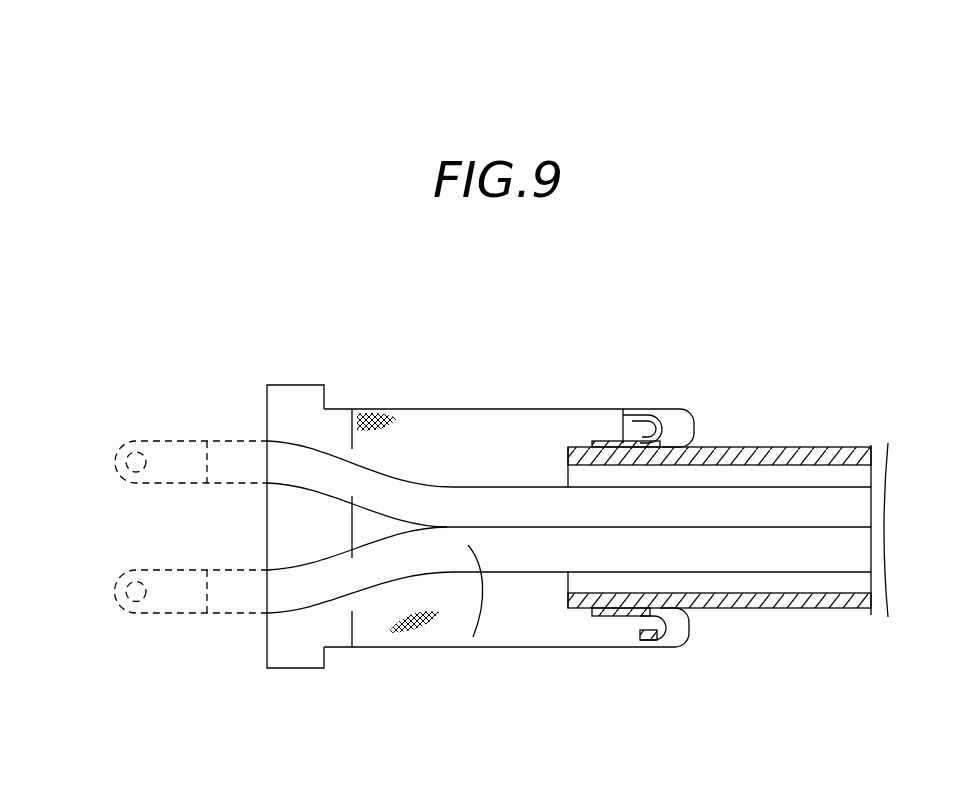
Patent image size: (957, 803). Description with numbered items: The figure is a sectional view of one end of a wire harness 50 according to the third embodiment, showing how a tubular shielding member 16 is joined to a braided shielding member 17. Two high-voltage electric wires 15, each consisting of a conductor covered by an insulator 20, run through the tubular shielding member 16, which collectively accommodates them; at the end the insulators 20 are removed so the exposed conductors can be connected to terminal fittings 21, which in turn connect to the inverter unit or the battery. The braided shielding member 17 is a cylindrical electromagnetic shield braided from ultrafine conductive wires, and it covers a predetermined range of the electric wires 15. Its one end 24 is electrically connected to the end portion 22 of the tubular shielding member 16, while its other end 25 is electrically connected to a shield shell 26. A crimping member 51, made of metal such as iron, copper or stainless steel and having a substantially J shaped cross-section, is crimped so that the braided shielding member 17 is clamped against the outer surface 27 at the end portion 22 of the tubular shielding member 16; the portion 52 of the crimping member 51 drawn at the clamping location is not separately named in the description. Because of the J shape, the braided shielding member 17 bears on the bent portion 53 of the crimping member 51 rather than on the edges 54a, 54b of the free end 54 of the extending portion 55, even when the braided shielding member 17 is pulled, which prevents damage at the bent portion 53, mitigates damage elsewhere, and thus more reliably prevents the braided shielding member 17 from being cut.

The high-voltage electric wire 15 is at (863, 506).
The tubular shielding member 16 is at (832, 445).
The braided shielding member 17 is at (428, 406).
The insulator 20 is at (470, 512).
The terminal fitting 21 is at (115, 461).
The end portion of the tubular shielding member 22 is at (583, 449).
The one end of the braided shielding member 24 is at (593, 442).
The other end of the braided shielding member 25 is at (362, 408).
The shield shell 26 is at (287, 384).
The outer surface 27 is at (774, 447).
The wire harness 50 is at (68, 325).
The crimping member 51 is at (560, 320).
The barrel portion 52 is at (618, 440).
The bent portion 53 is at (695, 412).
The free end 54 is at (637, 414).
The edge 54a is at (626, 416).
The edge 54b is at (650, 412).
The extending portion 55 is at (662, 412).